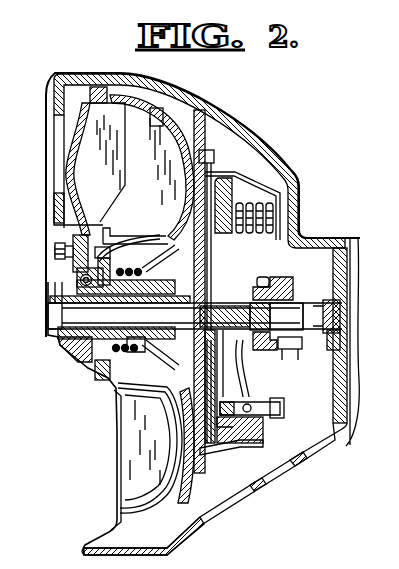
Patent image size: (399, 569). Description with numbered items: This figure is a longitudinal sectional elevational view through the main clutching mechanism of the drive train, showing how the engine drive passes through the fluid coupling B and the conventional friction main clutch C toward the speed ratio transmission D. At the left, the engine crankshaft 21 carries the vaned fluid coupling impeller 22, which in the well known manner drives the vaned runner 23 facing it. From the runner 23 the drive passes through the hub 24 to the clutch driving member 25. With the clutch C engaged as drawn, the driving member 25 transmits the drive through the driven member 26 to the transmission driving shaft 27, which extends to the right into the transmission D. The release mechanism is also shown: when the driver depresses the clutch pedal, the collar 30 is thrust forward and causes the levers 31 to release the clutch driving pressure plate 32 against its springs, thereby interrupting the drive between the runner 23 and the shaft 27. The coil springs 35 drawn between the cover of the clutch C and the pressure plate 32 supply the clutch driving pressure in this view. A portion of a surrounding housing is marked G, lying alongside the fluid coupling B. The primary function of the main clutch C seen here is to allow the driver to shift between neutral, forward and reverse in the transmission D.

The engine crankshaft 21 is at (45, 273).
The fluid coupling impeller 22 is at (77, 170).
The runner 23 is at (156, 120).
The hub 24 is at (195, 309).
The clutch driving member 25 is at (203, 150).
The driven member 26 is at (217, 258).
The transmission driving shaft 27 is at (315, 293).
The collar 30 is at (288, 342).
The levers 31 is at (243, 370).
The clutch driving pressure plate 32 is at (263, 432).
The springs 35 is at (270, 217).
The fluid coupling B is at (72, 143).
The main clutch C is at (238, 175).
The gear housing G is at (5, 361).
The speed ratio transmission D is at (18, 567).